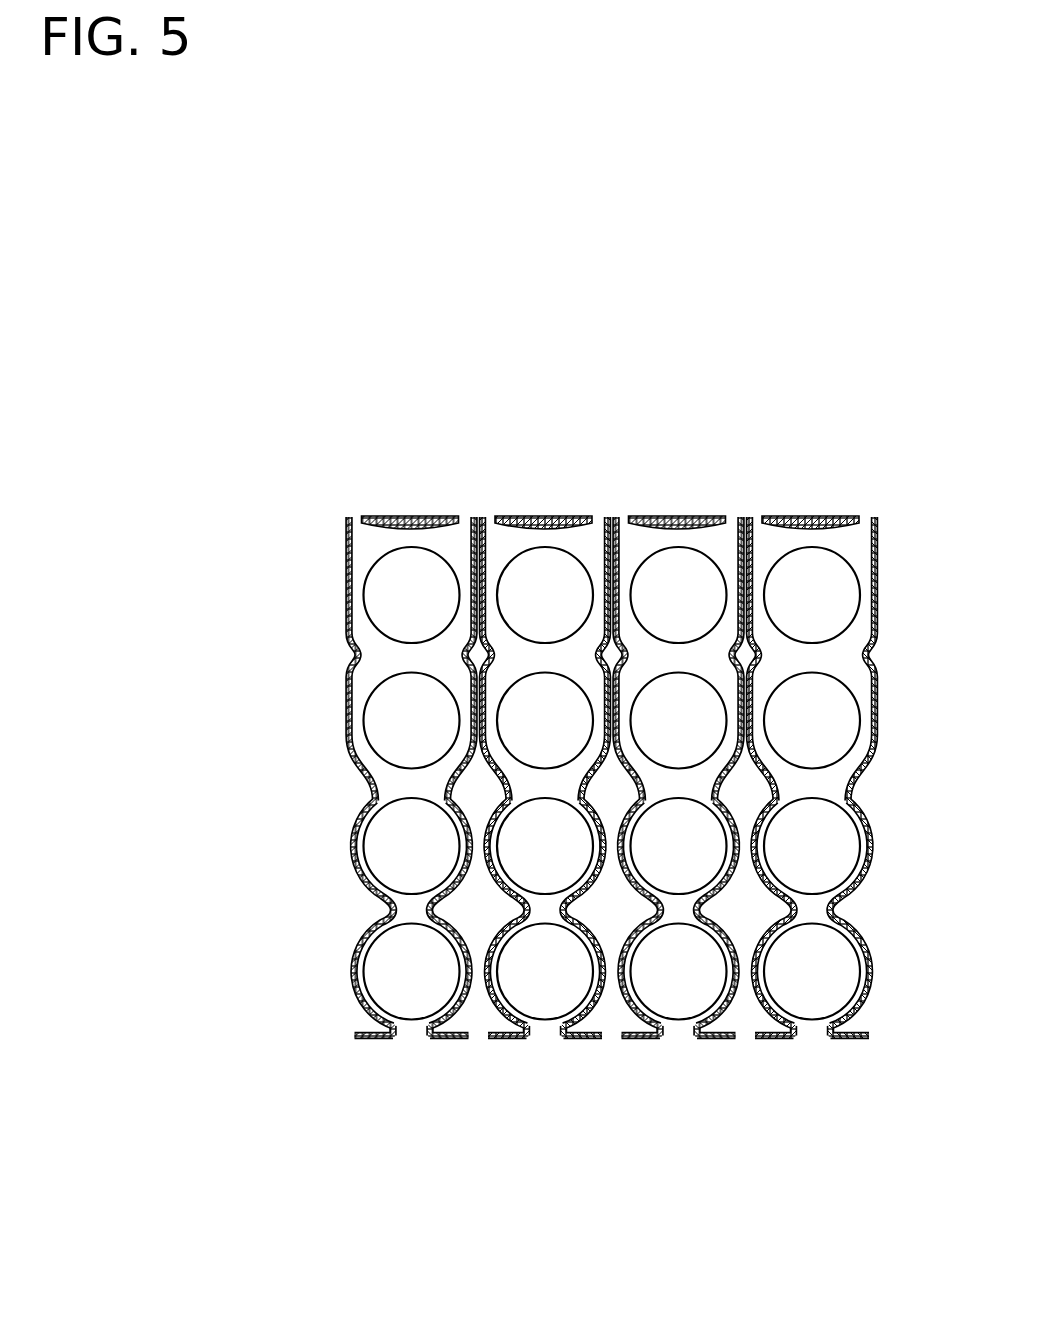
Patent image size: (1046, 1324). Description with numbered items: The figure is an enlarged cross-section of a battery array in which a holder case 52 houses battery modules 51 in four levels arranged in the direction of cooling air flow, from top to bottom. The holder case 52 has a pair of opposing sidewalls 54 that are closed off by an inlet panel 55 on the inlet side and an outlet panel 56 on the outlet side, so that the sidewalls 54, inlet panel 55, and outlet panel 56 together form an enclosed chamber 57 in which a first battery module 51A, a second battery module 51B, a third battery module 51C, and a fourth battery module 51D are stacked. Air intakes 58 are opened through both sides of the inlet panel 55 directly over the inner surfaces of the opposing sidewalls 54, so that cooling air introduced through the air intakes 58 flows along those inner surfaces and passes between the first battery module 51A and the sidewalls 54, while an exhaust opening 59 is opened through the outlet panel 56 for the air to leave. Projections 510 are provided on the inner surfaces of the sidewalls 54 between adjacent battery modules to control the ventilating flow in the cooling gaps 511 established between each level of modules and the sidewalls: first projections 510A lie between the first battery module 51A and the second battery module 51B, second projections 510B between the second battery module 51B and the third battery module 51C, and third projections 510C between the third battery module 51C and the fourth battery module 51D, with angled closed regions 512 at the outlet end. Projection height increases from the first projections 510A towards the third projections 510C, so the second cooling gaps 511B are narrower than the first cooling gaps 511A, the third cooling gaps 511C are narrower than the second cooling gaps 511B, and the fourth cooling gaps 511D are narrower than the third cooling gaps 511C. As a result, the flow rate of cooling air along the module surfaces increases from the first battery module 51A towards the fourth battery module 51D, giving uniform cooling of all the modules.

The holder case 52 is at (340, 430).
The inlet panel 55 is at (403, 519).
The air intakes 58 is at (354, 517).
The enclosed chamber 57 is at (357, 553).
The opposing sidewalls 54 is at (479, 517).
The battery modules 51 is at (612, 699).
The first battery module 51A is at (445, 592).
The second battery module 51B is at (437, 705).
The third battery module 51C is at (452, 837).
The fourth battery module 51D is at (450, 957).
The cooling gaps 511 is at (197, 630).
The first cooling gaps 511A is at (357, 622).
The second cooling gaps 511B is at (358, 747).
The third cooling gaps 511C is at (362, 835).
The fourth cooling gaps 511D is at (362, 952).
The angled closed regions 512 is at (375, 1023).
The outlet panel 56 is at (357, 1040).
The exhaust opening 59 is at (413, 1040).
The projections 510 is at (524, 934).
The first projections 510A is at (365, 662).
The second projections 510B is at (421, 895).
The third projections 510C is at (392, 800).